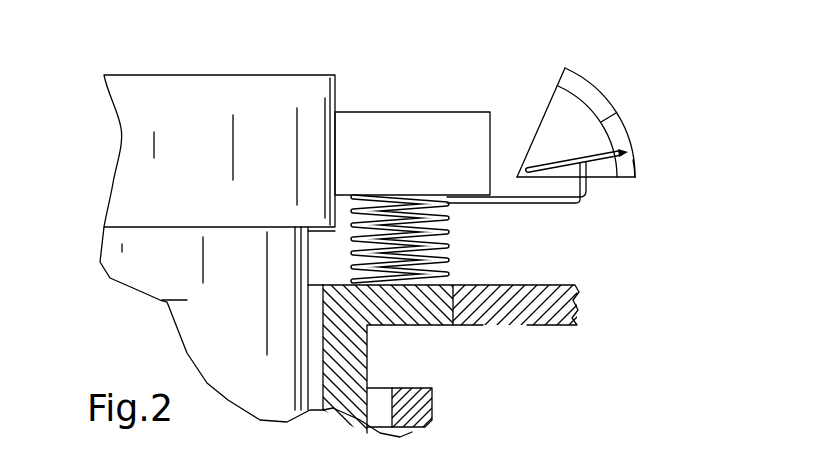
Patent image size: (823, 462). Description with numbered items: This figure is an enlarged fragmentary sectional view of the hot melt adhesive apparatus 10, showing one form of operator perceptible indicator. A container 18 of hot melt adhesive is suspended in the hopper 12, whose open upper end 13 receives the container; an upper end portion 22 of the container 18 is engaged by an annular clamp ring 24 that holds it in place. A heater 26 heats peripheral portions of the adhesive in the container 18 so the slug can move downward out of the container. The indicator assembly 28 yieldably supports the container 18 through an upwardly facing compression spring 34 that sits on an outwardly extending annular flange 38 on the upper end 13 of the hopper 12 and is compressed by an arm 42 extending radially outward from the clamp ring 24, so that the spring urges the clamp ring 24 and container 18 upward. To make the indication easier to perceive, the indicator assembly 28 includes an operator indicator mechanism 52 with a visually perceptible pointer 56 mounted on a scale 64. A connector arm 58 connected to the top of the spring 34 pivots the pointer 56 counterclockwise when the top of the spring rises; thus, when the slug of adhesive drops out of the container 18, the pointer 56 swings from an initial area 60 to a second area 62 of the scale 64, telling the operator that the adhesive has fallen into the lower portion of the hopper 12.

The apparatus 10 is at (668, 294).
The hopper 12 is at (390, 371).
The open upper end 13 is at (318, 290).
The container 18 is at (160, 300).
The upper end portion 22 is at (120, 249).
The clamp ring 24 is at (95, 185).
The heater 26 is at (427, 407).
The indicator assembly 28 is at (572, 232).
The compression spring 34 is at (447, 243).
The annular flange 38 is at (455, 308).
The arm 42 is at (382, 140).
The operator indicator mechanism 52 is at (617, 82).
The pointer 56 is at (557, 155).
The connector arm 58 is at (587, 193).
The initial area 60 is at (617, 127).
The second area 62 is at (573, 88).
The scale 64 is at (648, 170).